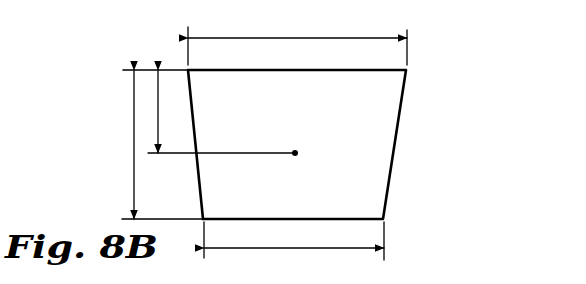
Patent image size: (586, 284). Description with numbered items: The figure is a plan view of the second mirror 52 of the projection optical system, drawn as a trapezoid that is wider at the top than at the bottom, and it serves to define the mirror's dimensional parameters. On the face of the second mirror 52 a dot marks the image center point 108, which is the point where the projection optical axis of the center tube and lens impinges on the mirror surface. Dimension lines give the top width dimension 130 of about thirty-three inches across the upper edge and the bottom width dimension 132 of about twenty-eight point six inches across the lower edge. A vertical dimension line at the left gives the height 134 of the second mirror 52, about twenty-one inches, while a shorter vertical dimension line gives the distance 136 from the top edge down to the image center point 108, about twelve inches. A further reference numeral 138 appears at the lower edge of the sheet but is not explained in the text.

The second mirror 52 is at (401, 117).
The image center point 108 is at (304, 163).
The top width dimension 130 is at (296, 38).
The bottom width dimension 132 is at (296, 248).
The height dimension 134 is at (135, 153).
The top-to-image-center-point dimension 136 is at (157, 110).
The dimension (cut off at sheet edge) 138 is at (352, 280).